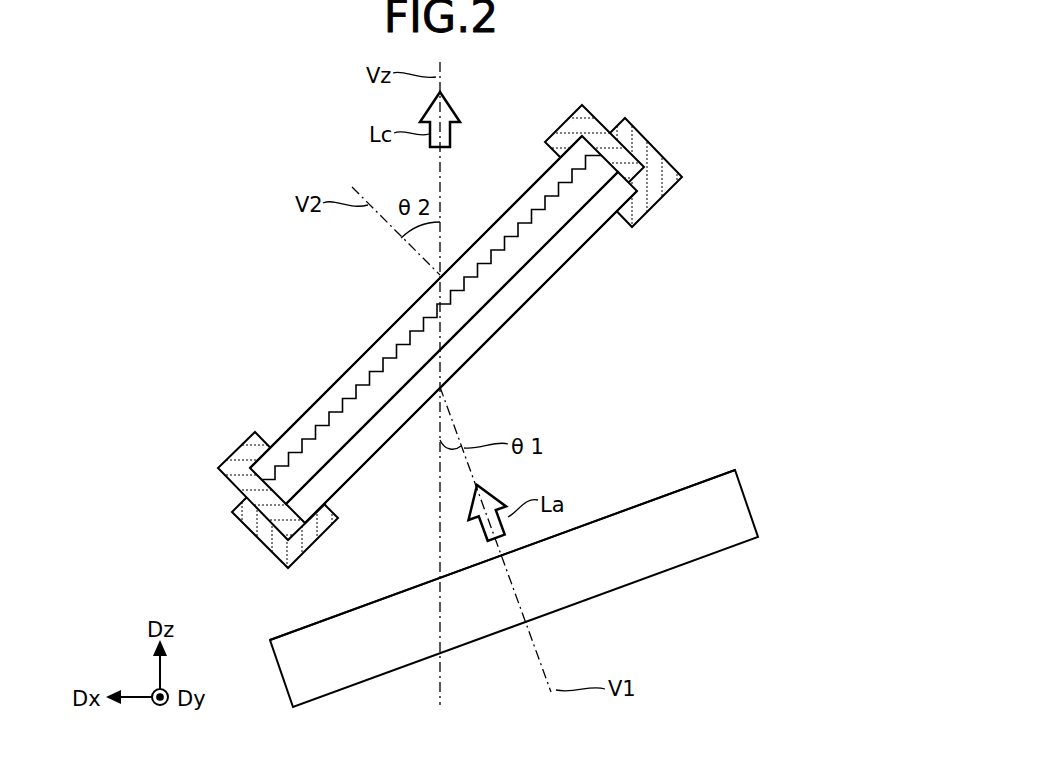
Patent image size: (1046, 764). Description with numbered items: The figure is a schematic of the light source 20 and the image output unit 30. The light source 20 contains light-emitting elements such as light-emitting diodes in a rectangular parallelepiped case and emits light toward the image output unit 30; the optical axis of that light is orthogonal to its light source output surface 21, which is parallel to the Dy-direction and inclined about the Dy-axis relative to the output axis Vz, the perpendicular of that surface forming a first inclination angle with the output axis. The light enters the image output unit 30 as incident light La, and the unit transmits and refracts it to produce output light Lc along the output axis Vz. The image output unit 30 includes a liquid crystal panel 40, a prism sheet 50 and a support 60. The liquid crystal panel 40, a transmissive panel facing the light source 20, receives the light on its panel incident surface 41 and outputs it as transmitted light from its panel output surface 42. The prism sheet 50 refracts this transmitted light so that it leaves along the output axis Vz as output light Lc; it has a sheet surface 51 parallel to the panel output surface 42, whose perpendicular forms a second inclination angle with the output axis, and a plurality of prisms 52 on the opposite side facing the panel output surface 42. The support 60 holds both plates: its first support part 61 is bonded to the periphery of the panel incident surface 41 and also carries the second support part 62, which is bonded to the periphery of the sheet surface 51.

The light source 20 is at (546, 571).
The light source output surface 21 is at (668, 493).
The image output unit 30 is at (497, 332).
The liquid crystal panel 40 is at (528, 367).
The panel incident surface 41 is at (355, 478).
The panel output surface 42 is at (372, 404).
The prism sheet 50 is at (489, 296).
The sheet surface 51 is at (283, 434).
The prisms 52 is at (318, 428).
The support 60 is at (680, 159).
The first support part 61 is at (262, 541).
The second support part 62 is at (240, 490).